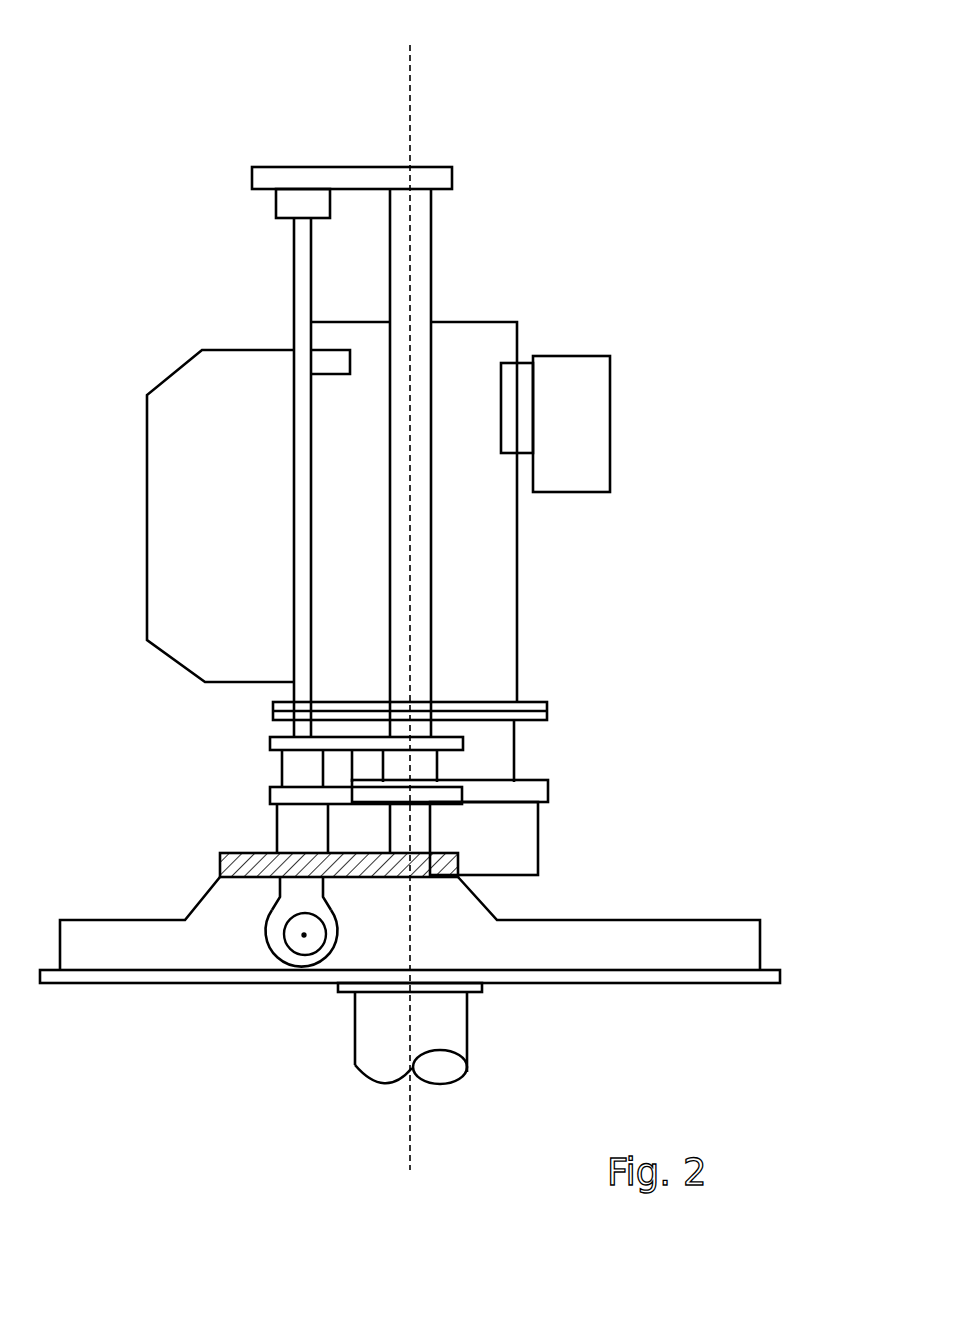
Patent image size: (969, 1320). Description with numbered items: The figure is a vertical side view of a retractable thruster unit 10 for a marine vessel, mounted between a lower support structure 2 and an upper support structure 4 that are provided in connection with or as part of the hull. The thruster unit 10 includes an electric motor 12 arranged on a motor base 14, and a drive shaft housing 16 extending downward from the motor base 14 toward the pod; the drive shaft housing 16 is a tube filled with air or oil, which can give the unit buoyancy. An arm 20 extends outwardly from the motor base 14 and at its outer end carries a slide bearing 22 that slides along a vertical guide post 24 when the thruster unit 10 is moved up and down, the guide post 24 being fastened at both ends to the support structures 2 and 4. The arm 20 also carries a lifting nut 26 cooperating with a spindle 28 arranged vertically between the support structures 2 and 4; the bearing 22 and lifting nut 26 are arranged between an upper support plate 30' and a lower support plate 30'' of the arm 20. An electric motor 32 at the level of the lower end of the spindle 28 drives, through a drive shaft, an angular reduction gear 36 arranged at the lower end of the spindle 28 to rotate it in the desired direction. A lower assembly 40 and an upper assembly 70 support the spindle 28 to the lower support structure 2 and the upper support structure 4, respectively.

The upper support structure 4 is at (355, 177).
The upper assembly 70 is at (300, 203).
The spindle 28 is at (303, 340).
The guide post 24 is at (416, 290).
The electric motor 12 is at (245, 497).
The thruster unit 10 is at (562, 531).
The upper support plate 30' is at (312, 726).
The slide bearing 22 is at (427, 770).
The lifting nut 26 is at (305, 768).
The arm 20 is at (462, 804).
The lower support plate 30'' is at (269, 809).
The motor base 14 is at (467, 825).
The electric motor 32 is at (263, 927).
The lower assembly 40 is at (455, 876).
The angular reduction gear 36 is at (273, 950).
The lower support structure 2 is at (315, 830).
The drive shaft housing 16 is at (383, 1028).